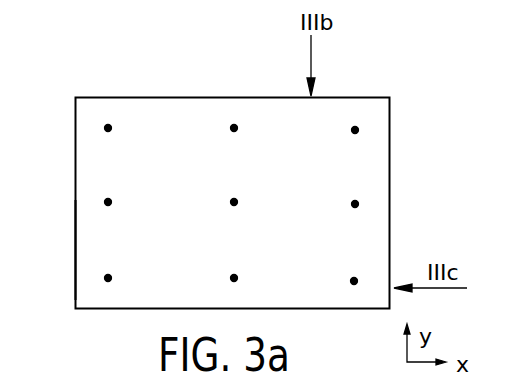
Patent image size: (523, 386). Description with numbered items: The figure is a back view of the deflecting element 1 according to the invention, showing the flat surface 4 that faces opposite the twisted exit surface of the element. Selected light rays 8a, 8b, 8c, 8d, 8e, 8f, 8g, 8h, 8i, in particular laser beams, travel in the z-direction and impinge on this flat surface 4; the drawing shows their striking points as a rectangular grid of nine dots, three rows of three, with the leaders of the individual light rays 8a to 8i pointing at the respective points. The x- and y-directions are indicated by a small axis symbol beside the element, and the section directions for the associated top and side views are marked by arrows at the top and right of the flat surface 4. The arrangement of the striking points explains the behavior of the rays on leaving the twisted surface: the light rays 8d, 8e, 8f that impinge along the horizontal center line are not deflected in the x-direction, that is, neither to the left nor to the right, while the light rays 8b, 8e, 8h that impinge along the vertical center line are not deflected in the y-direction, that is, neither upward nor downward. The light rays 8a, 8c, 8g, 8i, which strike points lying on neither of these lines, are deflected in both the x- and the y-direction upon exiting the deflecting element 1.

The deflecting element 1 is at (66, 268).
The flat surface 4 is at (328, 164).
The light ray 8a is at (108, 125).
The light ray 8b is at (235, 126).
The light ray 8c is at (356, 128).
The light ray 8d is at (103, 202).
The light ray 8e is at (234, 200).
The light ray 8f is at (359, 204).
The light ray 8g is at (111, 275).
The light ray 8h is at (236, 275).
The light ray 8i is at (352, 278).